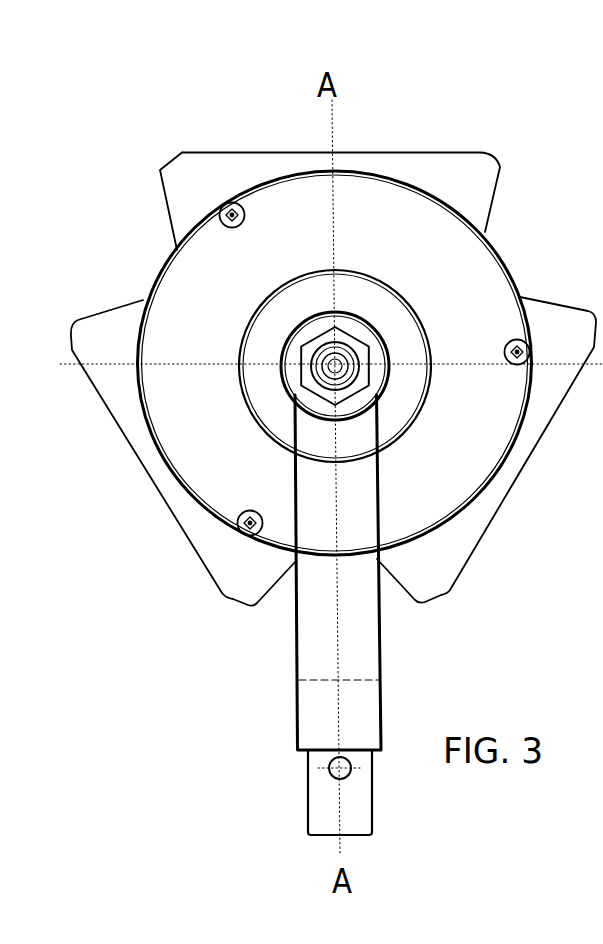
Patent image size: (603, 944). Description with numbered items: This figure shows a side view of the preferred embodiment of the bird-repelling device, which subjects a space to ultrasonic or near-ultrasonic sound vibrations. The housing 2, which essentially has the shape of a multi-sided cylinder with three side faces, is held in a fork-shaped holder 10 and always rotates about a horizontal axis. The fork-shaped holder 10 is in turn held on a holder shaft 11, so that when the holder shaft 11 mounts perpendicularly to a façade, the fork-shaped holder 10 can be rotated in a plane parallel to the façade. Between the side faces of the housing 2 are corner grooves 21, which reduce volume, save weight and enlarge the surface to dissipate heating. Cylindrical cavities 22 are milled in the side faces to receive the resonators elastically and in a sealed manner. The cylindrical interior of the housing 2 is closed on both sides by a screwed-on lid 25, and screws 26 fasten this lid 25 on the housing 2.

The housing 2 is at (302, 296).
The fork-shaped holder 10 is at (308, 640).
The holder shaft 11 is at (360, 793).
The corner grooves 21 is at (512, 262).
The cylindrical cavities 22 is at (286, 152).
The lid 25 is at (188, 298).
The screws 26 is at (226, 205).